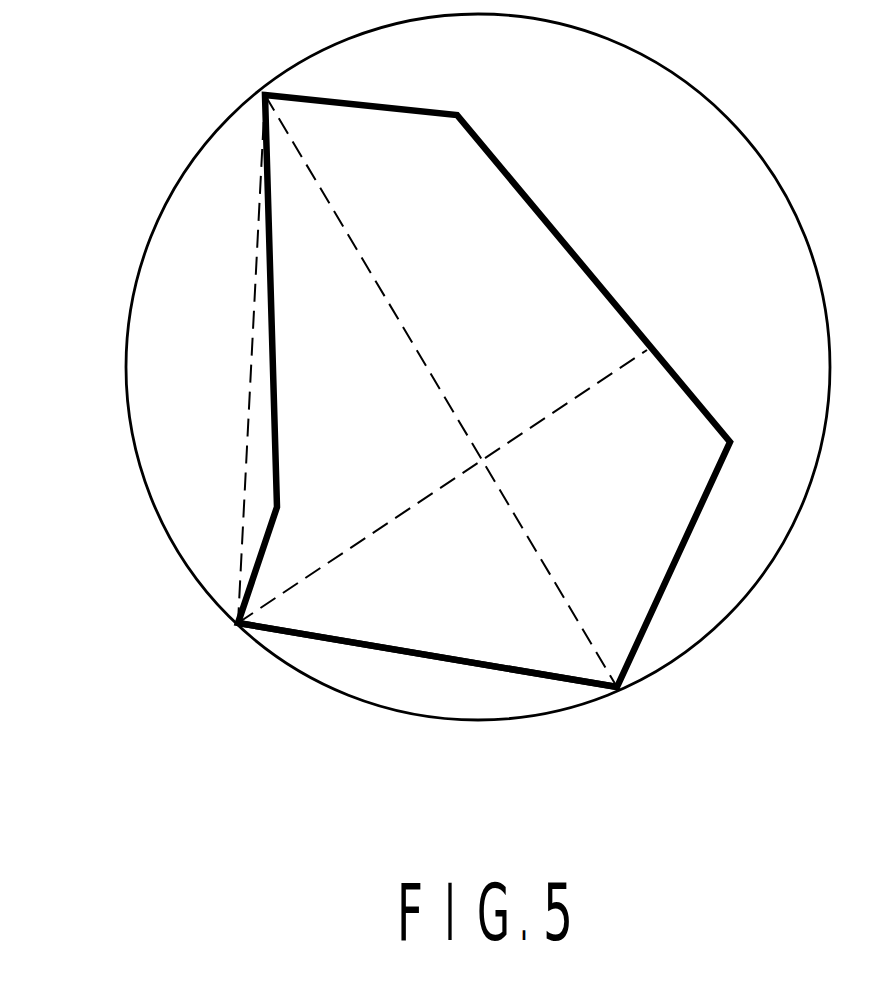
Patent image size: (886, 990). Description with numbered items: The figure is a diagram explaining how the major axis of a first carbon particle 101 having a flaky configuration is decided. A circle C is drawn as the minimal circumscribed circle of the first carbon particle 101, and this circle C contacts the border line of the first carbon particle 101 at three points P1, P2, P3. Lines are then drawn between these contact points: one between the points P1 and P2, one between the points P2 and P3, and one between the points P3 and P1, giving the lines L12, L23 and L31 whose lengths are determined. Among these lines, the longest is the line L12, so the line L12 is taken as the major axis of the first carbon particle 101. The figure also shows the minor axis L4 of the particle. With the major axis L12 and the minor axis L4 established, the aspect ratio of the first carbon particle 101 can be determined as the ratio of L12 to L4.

The circle C is at (698, 92).
The first carbon particle 101 is at (267, 285).
The line between points P3 and P1 L31 is at (250, 382).
The line between points P1 and P2 L12 is at (535, 556).
The line between points P2 and P3 L23 is at (480, 664).
The minor axis L4 is at (568, 398).
The contact point P1 is at (253, 68).
The contact point P2 is at (637, 710).
The contact point P3 is at (210, 639).